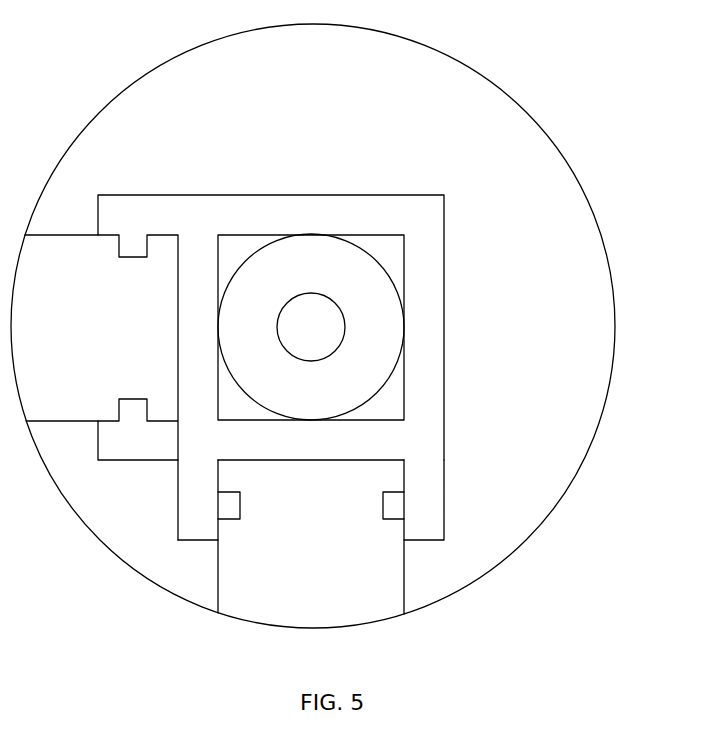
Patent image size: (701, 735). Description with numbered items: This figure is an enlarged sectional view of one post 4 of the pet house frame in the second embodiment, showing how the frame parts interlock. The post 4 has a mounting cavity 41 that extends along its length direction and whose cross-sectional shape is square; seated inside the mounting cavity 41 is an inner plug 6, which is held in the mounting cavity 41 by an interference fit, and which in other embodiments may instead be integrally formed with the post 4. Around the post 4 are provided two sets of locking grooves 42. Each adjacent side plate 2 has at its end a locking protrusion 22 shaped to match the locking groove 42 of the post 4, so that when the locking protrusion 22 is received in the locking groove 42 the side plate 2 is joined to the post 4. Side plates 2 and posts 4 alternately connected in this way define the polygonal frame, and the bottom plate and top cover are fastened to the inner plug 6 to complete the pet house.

The side plate 2 is at (293, 590).
The locking protrusion 22 is at (323, 480).
The post 4 is at (418, 397).
The mounting cavity 41 is at (398, 265).
The locking groove 42 is at (405, 478).
The inner plug 6 is at (376, 338).